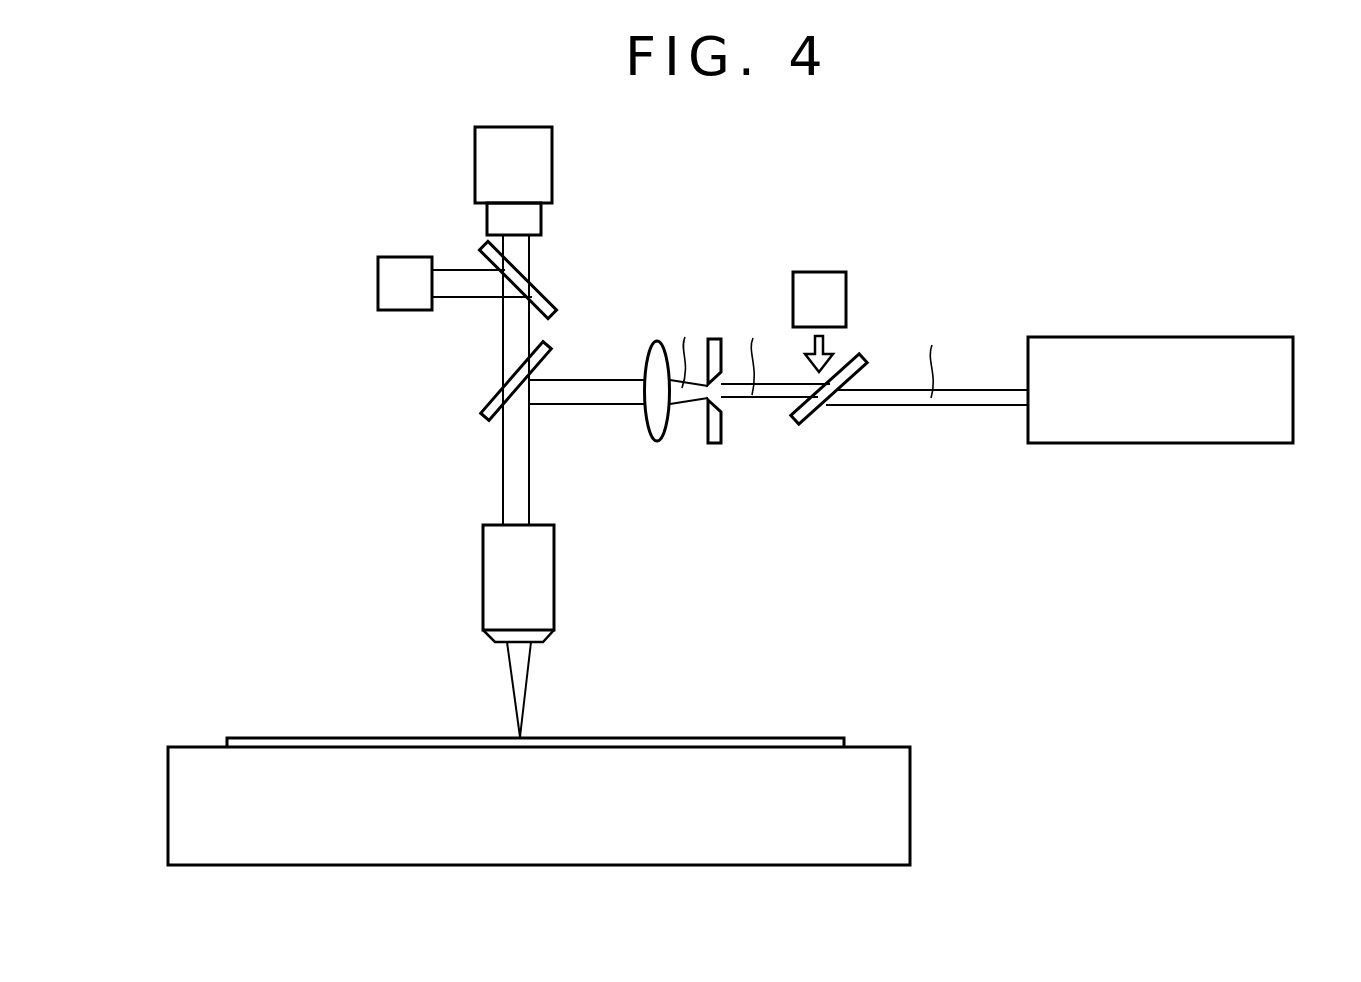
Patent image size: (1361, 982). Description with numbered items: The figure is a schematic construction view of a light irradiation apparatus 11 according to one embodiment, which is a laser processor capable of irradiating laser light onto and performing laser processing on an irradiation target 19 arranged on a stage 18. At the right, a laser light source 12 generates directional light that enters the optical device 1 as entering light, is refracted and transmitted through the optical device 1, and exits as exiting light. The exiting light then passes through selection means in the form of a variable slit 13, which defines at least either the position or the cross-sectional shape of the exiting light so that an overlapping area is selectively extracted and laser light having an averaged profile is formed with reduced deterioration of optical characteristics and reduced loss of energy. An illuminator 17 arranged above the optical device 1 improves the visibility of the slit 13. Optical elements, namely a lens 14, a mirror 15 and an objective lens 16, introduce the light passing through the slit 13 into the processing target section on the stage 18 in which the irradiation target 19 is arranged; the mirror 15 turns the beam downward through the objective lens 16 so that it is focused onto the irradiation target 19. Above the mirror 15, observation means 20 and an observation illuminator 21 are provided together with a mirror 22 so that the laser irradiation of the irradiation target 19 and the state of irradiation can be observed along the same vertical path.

The light irradiation apparatus 11 is at (263, 134).
The laser light source 12 is at (1168, 338).
The variable slit 13 is at (714, 446).
The lens 14 is at (657, 442).
The mirror 15 is at (556, 348).
The objective lens 16 is at (543, 617).
The illuminator 17 is at (820, 274).
The stage 18 is at (892, 826).
The irradiation target 19 is at (790, 737).
The observation means 20 is at (478, 141).
The observation illuminator 21 is at (378, 267).
The mirror 22 is at (553, 302).
The optical device 1 is at (812, 428).